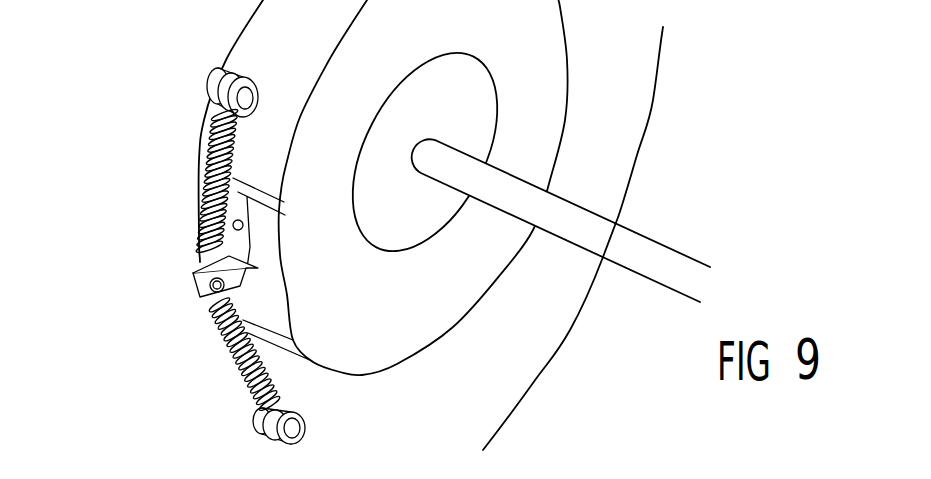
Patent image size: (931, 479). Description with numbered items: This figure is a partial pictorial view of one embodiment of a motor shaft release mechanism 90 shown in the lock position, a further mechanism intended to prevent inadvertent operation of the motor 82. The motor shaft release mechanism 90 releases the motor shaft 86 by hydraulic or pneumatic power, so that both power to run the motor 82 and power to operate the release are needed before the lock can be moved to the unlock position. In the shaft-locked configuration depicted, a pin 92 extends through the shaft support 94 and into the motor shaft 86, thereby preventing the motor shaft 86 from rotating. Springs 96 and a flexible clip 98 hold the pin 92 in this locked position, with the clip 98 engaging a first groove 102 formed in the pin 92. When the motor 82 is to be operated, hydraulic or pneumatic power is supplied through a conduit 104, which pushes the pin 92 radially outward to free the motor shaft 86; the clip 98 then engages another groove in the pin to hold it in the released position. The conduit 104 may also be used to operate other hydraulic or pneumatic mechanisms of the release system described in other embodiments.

The motor 82 is at (655, 99).
The motor shaft 86 is at (499, 109).
The motor shaft release mechanism 90 is at (200, 236).
The pin 92 is at (193, 275).
The shaft support 94 is at (453, 327).
The springs 96 is at (234, 353).
The flexible clip 98 is at (212, 158).
The first groove 102 is at (243, 264).
The conduit 104 is at (597, 230).